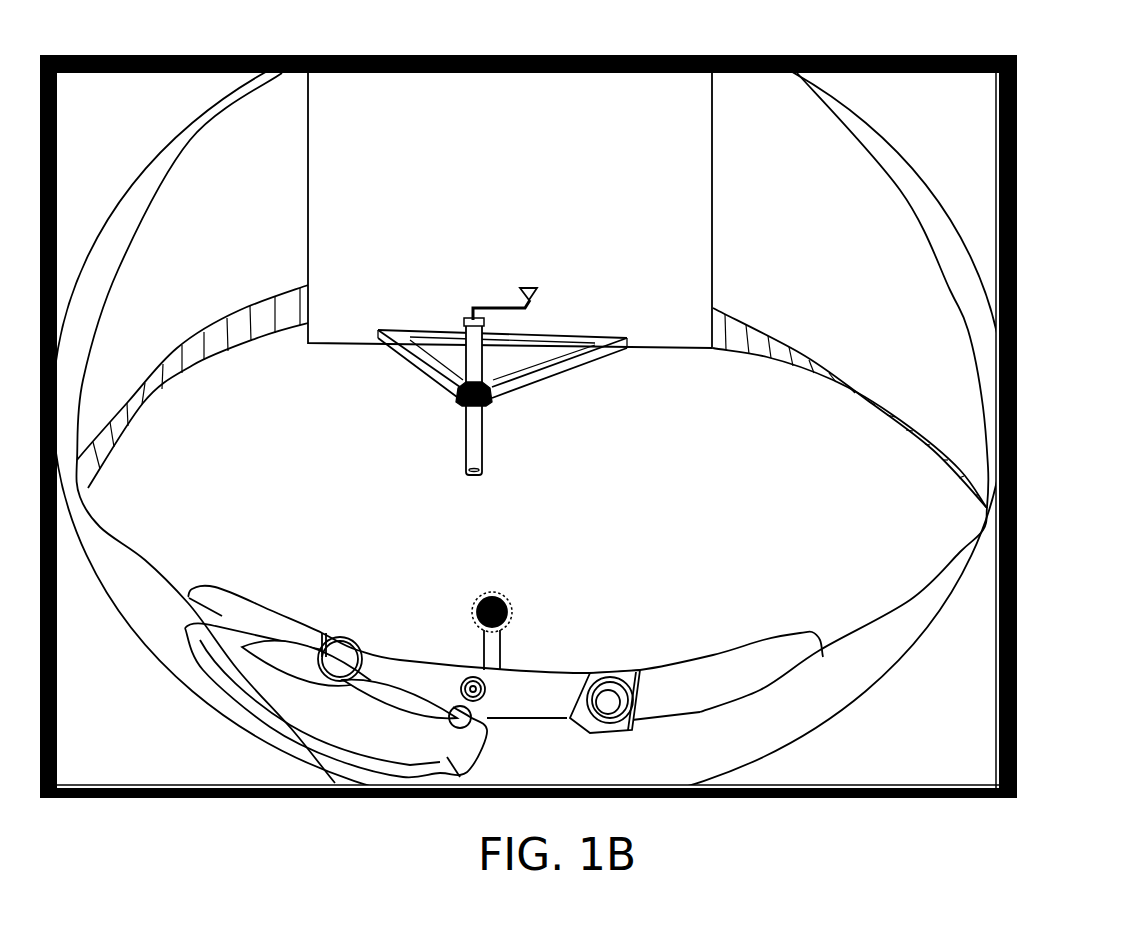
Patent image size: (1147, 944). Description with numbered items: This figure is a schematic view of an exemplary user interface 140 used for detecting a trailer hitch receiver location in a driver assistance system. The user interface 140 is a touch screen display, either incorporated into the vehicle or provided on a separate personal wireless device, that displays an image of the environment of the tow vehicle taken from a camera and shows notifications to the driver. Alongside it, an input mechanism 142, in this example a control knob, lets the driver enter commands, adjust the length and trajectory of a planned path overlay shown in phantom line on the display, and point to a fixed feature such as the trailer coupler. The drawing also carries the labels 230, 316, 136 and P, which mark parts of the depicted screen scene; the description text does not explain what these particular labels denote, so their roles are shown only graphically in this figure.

The user interface 140 is at (1017, 247).
The input mechanism 142 is at (878, 590).
The screen / display panel 230 is at (510, 210).
The stand / tripod support 316 is at (502, 300).
The hub / pivot joint 136 is at (449, 396).
The reference point P is at (397, 224).